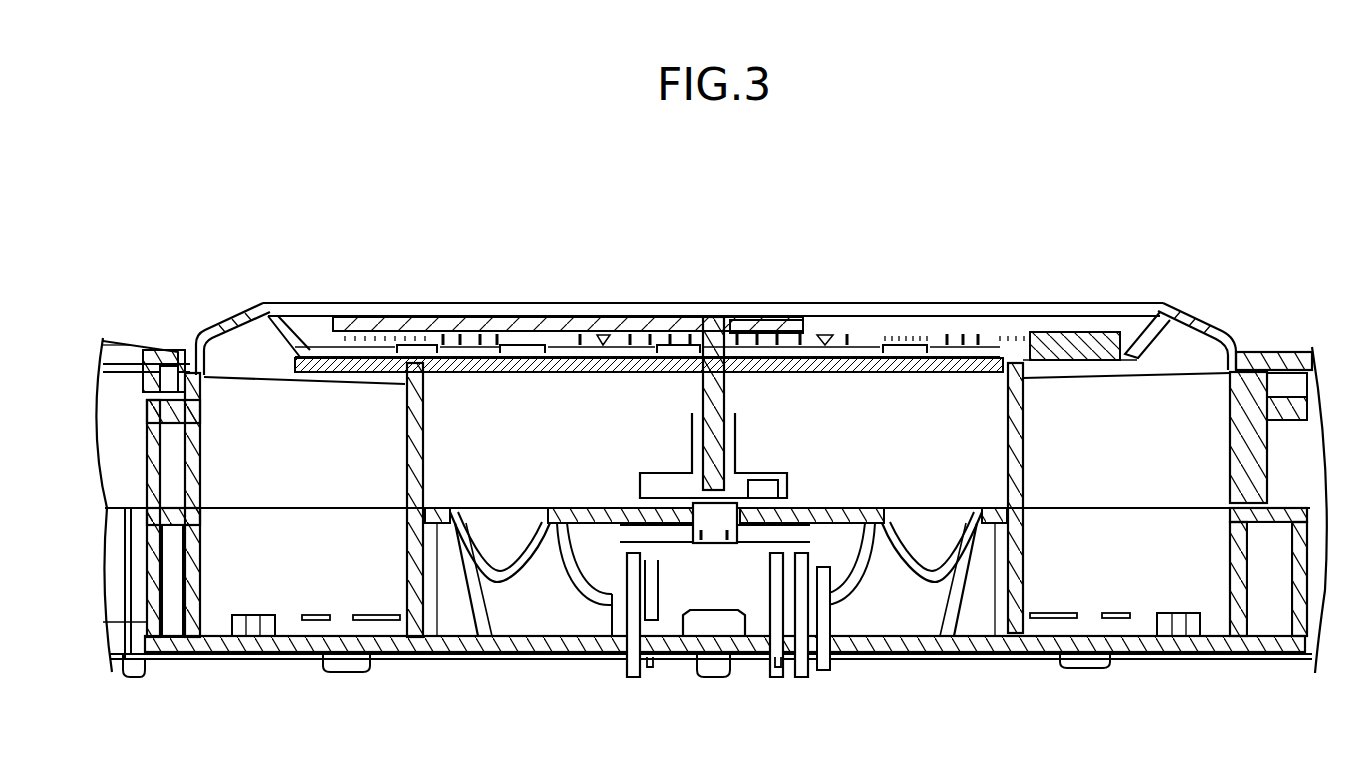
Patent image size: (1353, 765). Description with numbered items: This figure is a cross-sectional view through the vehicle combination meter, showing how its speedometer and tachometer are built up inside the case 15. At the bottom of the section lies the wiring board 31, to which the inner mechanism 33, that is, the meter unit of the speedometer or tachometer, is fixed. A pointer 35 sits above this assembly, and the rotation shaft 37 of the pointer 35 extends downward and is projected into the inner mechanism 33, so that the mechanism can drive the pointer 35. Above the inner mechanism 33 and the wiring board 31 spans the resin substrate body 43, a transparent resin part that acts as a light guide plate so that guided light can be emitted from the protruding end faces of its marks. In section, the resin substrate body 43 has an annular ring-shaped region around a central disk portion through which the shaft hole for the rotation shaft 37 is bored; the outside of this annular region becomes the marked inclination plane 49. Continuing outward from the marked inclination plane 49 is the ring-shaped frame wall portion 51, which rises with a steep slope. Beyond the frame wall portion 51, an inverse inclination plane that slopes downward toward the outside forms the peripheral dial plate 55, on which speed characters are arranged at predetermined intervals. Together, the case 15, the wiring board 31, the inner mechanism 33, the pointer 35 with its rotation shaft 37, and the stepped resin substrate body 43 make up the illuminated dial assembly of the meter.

The case 15 is at (433, 506).
The wiring board 31 is at (1036, 637).
The inner mechanism 33 is at (676, 597).
The pointer 35 is at (383, 318).
The rotation shaft 37 is at (728, 392).
The resin substrate body 43 is at (827, 285).
The marked inclination plane 49 is at (957, 338).
The frame wall portion 51 is at (1050, 318).
The peripheral dial plate 55 is at (1210, 330).